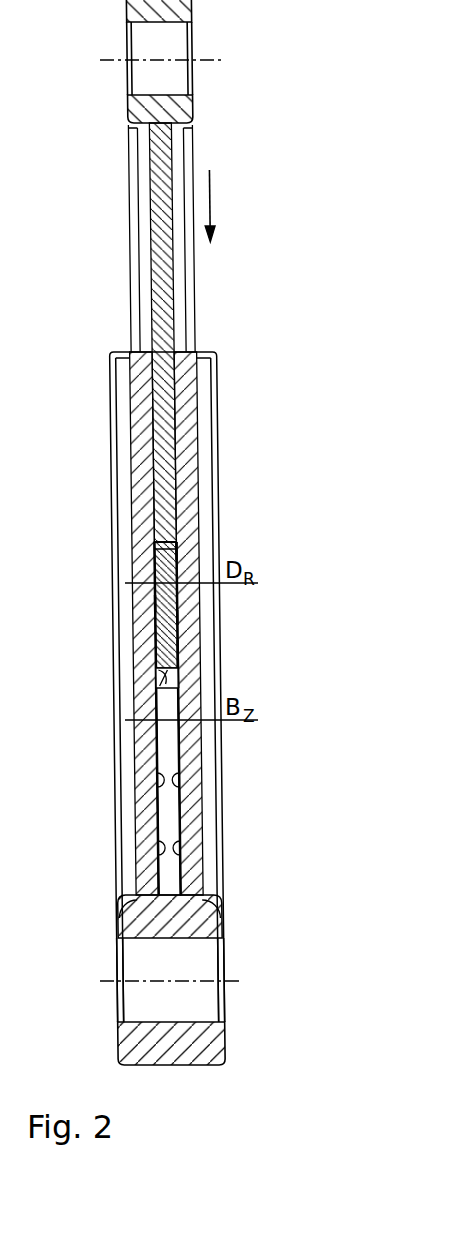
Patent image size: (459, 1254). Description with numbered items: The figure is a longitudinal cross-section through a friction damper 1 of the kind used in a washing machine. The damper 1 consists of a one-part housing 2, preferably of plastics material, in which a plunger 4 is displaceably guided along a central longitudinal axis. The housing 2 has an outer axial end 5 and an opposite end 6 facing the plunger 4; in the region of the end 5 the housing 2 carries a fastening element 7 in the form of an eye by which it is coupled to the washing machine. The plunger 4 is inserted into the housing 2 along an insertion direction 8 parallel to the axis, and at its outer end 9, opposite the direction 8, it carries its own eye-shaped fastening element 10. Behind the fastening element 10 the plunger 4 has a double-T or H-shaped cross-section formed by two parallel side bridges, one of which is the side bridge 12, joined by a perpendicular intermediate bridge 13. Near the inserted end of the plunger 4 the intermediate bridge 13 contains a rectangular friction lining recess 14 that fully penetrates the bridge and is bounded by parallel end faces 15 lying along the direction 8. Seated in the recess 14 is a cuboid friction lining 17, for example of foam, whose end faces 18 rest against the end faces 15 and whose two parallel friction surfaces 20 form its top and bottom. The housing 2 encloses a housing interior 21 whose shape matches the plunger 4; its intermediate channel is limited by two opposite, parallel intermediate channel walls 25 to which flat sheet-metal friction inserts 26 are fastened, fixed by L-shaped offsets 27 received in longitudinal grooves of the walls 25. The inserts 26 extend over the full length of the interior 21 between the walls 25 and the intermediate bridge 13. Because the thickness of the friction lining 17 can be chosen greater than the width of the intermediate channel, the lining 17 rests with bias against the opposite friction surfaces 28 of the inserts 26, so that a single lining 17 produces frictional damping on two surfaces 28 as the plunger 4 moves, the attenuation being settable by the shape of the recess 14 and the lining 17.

The damper 1 is at (98, 454).
The housing 2 is at (103, 583).
The plunger 4 is at (118, 161).
The outer axial end 5 is at (117, 1032).
The end facing the plunger 6 is at (125, 351).
The fastening element 7 is at (137, 960).
The insertion direction 8 is at (212, 204).
The outer end of the plunger 9 is at (127, 108).
The fastening element 10 is at (145, 40).
The side bridge 12 is at (133, 286).
The intermediate bridge 13 is at (160, 218).
The friction lining recess 14 is at (142, 556).
The end faces 15 is at (187, 555).
The friction lining 17 is at (165, 636).
The end faces 18 is at (160, 540).
The friction surfaces 20 is at (157, 602).
The housing interior 21 is at (167, 820).
The intermediate channel walls 25 is at (137, 855).
The friction inserts 26 is at (155, 752).
The L-shaped offsets 27 is at (118, 915).
The friction surfaces 28 is at (137, 787).